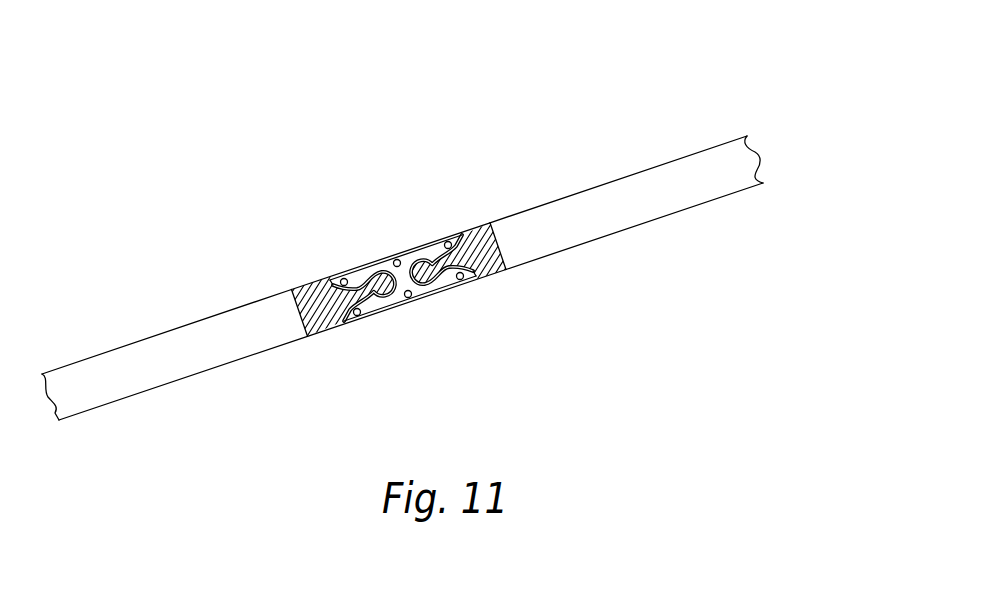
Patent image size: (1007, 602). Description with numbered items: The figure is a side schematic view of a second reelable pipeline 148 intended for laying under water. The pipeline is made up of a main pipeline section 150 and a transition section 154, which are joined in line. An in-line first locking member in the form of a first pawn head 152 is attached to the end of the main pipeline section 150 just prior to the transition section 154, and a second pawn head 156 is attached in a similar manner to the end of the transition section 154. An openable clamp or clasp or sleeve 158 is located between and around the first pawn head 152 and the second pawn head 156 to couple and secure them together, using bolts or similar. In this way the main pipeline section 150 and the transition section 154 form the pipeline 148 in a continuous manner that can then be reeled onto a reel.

The second reelable pipeline 148 is at (400, 221).
The main pipeline section 150 is at (122, 385).
The first pawn head 152 is at (321, 328).
The transition section 154 is at (640, 227).
The second pawn head 156 is at (488, 276).
The openable clamp or clasp or sleeve 158 is at (400, 303).